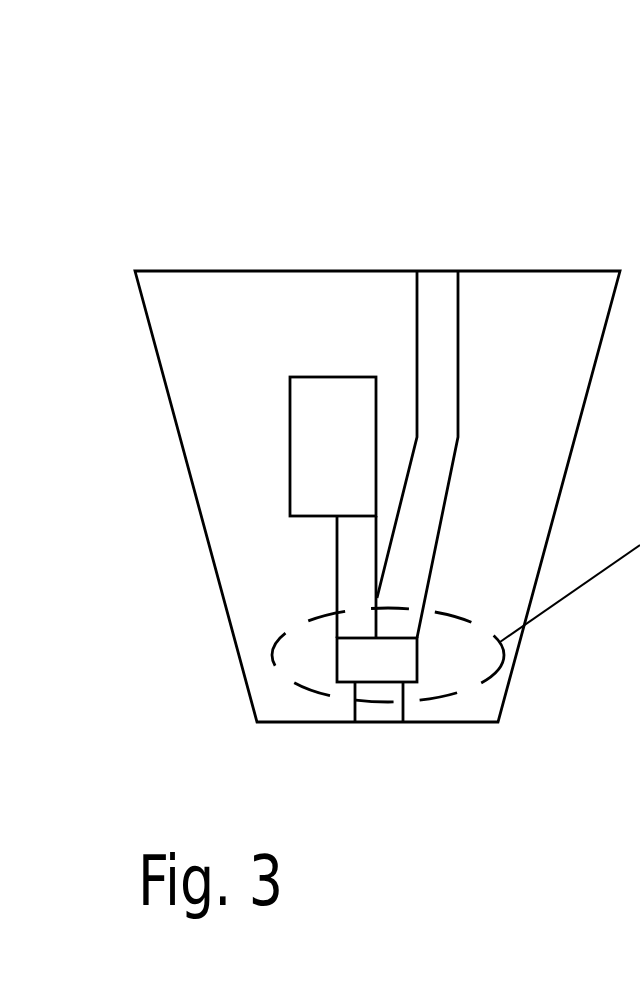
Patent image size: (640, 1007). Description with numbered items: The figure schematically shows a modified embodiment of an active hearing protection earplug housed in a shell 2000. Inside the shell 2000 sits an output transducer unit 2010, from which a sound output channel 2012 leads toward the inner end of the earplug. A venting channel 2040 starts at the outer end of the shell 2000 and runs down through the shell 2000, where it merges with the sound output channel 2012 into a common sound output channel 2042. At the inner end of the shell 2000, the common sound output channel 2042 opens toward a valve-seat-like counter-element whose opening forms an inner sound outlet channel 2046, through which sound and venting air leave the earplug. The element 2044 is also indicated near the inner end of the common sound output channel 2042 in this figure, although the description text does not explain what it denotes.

The shell 2000 is at (158, 373).
The output transducer unit 2010 is at (297, 430).
The sound output channel 2012 is at (353, 547).
The venting channel 2040 is at (438, 335).
The common sound output channel 2042 is at (363, 625).
The inlet seal 2044 is at (325, 654).
The inner sound outlet channel 2046 is at (380, 698).